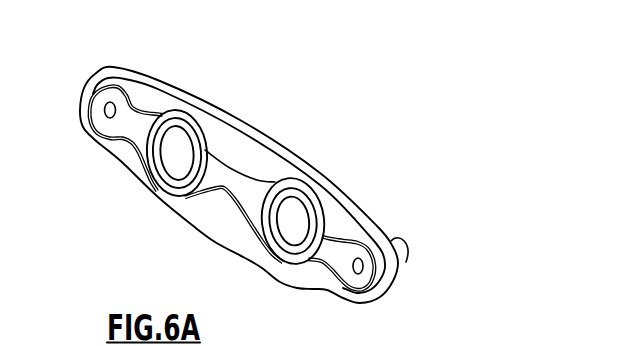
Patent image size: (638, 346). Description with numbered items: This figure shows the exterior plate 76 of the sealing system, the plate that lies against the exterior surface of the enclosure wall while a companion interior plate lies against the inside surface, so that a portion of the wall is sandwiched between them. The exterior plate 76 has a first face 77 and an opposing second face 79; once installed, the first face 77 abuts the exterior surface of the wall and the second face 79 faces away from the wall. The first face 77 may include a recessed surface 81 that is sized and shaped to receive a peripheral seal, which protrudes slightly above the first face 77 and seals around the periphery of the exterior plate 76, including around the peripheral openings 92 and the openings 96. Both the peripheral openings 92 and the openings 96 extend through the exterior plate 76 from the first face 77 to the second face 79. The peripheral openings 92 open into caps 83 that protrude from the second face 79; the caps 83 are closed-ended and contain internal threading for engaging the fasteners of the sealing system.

The exterior plate 76 is at (229, 82).
The first face 77 is at (255, 160).
The second face 79 is at (300, 154).
The recessed surface 81 is at (224, 192).
The cap 83 is at (402, 262).
The peripheral opening 92 is at (110, 112).
The opening 96 is at (178, 153).